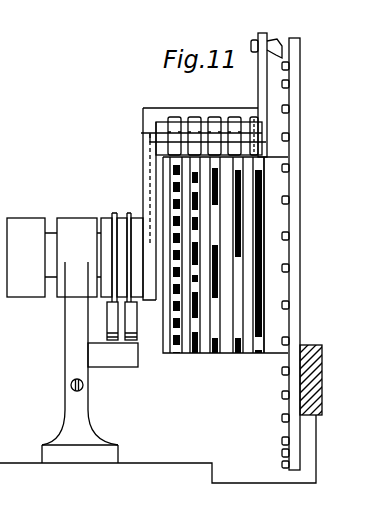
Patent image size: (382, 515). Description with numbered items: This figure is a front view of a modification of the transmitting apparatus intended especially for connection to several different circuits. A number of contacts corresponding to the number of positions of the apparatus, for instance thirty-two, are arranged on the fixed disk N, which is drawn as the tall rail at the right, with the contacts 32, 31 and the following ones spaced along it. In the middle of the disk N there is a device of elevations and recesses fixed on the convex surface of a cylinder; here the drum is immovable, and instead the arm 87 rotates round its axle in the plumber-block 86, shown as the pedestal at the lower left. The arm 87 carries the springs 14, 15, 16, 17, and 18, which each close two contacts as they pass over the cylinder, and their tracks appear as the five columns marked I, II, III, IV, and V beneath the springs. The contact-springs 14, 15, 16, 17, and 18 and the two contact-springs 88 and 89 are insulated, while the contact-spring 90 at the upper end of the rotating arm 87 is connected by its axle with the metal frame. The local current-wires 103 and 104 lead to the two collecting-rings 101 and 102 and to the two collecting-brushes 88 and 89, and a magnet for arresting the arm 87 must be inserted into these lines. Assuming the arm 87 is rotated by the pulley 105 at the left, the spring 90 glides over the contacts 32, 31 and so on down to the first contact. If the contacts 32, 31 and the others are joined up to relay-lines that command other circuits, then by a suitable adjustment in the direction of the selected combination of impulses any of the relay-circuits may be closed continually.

The spring 14 is at (174, 117).
The spring 15 is at (195, 117).
The spring 16 is at (215, 117).
The spring 17 is at (235, 117).
The spring 18 is at (268, 110).
The contact 31 is at (300, 84).
The contact 32 is at (300, 66).
The plumber-block 86 is at (67, 411).
The arm 87 is at (259, 96).
The collecting-brush 88 is at (112, 342).
The collecting-brush 89 is at (131, 342).
The contact-spring 90 is at (275, 43).
The collecting-ring 101 is at (114, 214).
The collecting-ring 102 is at (130, 214).
The local current-wire 103 is at (142, 134).
The local current-wire 104 is at (143, 160).
The pulley 105 is at (25, 219).
The fixed disk N is at (298, 150).
The column I is at (176, 269).
The column II is at (194, 269).
The column III is at (214, 269).
The column IV is at (237, 269).
The column V is at (259, 269).